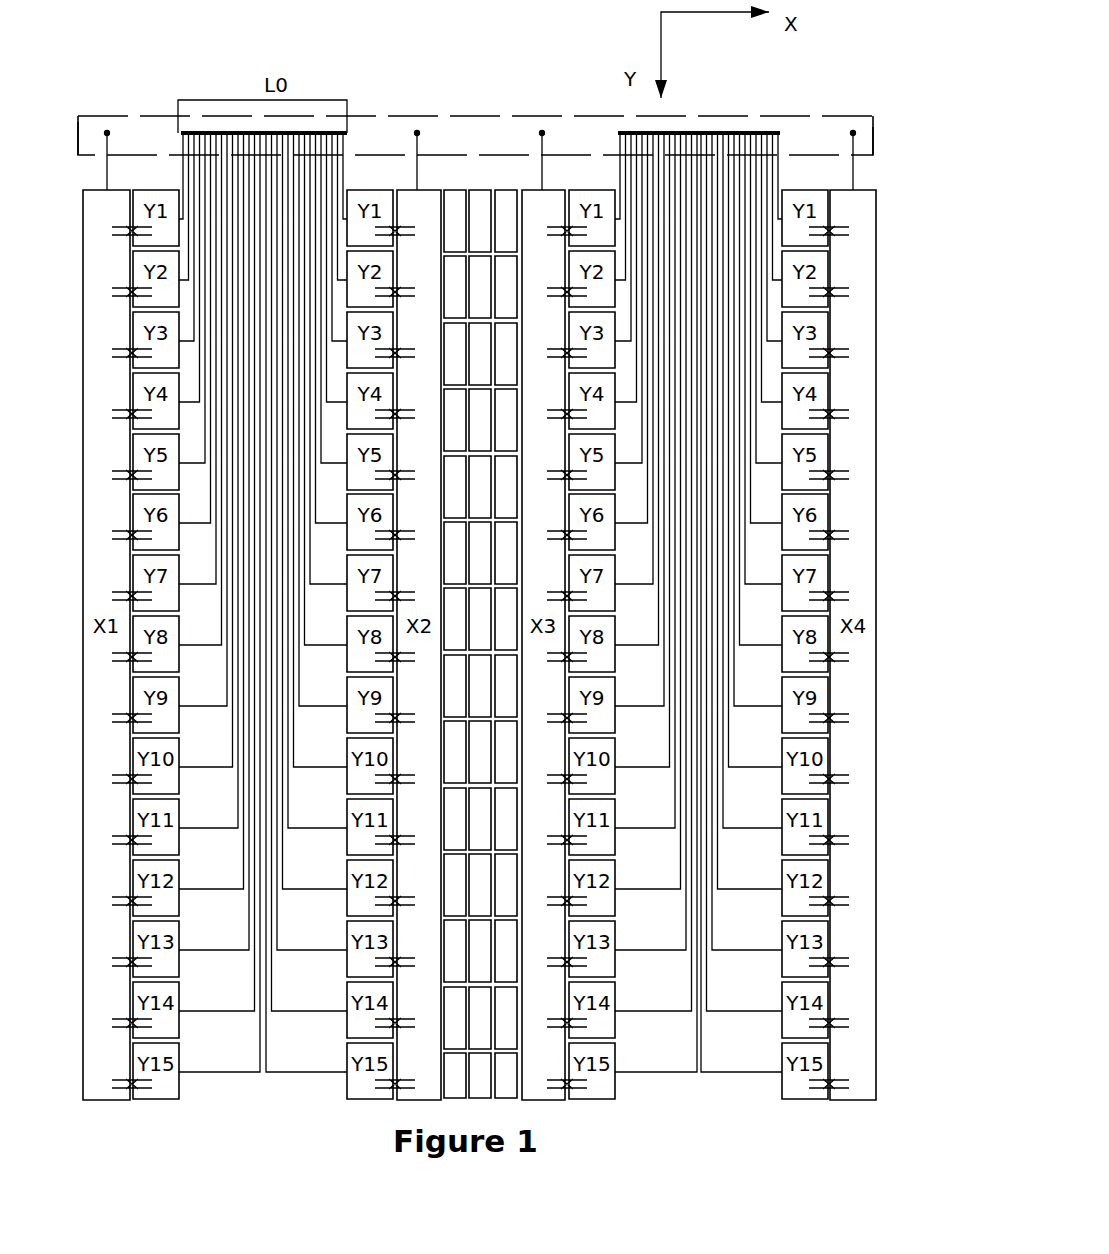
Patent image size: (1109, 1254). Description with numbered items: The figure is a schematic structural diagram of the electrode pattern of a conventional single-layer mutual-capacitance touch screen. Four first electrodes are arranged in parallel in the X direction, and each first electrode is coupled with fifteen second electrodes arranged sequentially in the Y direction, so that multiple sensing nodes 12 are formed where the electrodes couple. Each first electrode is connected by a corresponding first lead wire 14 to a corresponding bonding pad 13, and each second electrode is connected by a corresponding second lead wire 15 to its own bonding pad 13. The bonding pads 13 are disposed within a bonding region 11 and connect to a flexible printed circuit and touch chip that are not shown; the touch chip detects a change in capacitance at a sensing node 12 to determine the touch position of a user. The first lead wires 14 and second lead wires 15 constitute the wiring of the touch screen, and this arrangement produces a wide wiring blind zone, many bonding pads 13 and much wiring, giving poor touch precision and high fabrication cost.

The bonding region 11 is at (100, 113).
The sensing node 12 is at (117, 348).
The bonding pad 13 is at (108, 135).
The first lead wire 14 is at (421, 172).
The second lead wire 15 is at (300, 187).